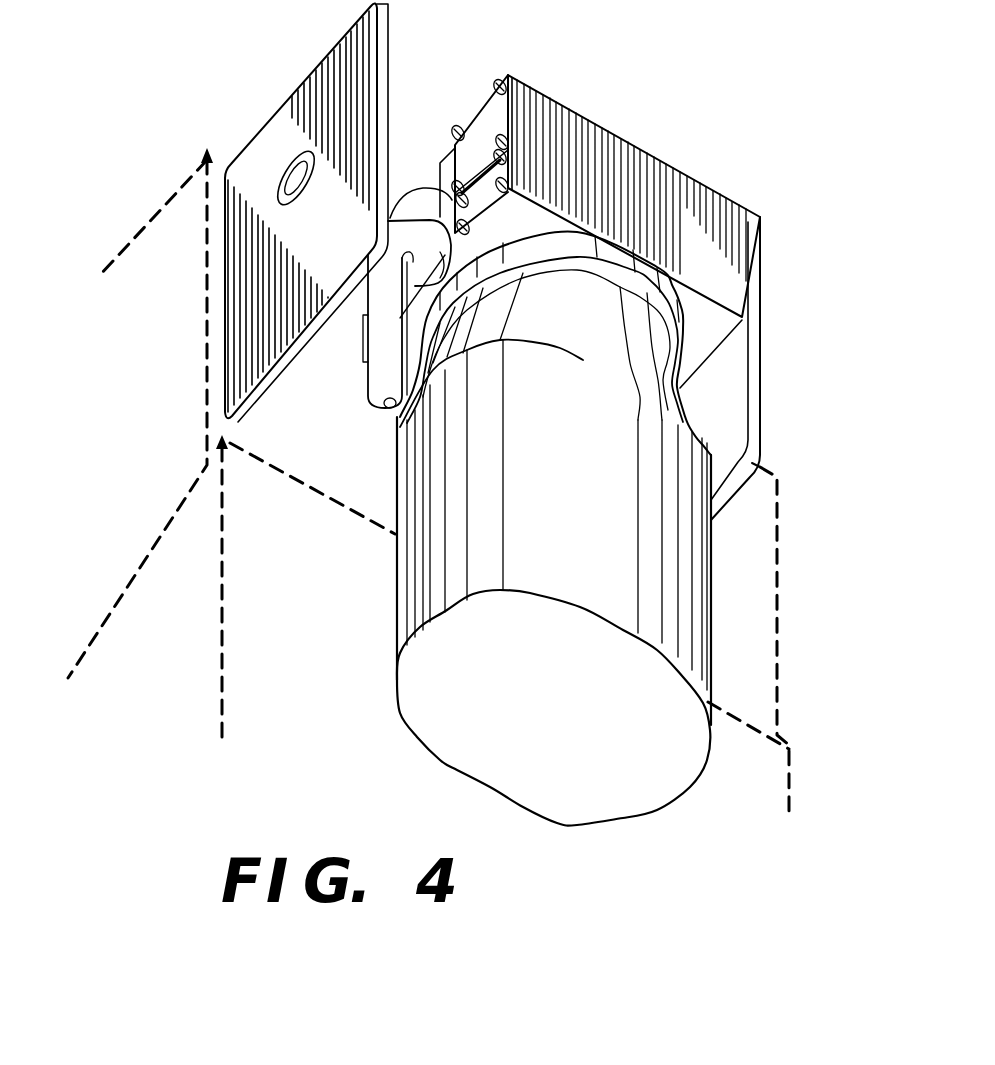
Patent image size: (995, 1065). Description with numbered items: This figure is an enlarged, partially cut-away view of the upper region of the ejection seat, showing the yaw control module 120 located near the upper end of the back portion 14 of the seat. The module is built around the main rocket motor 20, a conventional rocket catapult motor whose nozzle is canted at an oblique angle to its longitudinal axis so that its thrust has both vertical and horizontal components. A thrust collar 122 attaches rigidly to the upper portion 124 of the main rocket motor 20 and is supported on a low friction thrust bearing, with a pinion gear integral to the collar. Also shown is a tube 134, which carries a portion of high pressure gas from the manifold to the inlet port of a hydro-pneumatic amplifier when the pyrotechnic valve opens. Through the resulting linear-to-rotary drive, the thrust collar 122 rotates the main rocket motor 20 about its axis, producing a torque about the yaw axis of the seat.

The back portion 14 is at (115, 307).
The main rocket motor 20 is at (413, 593).
The yaw control module 120 is at (766, 141).
The thrust collar 122 is at (653, 290).
The upper portion 124 is at (640, 367).
The tube 134 is at (385, 389).